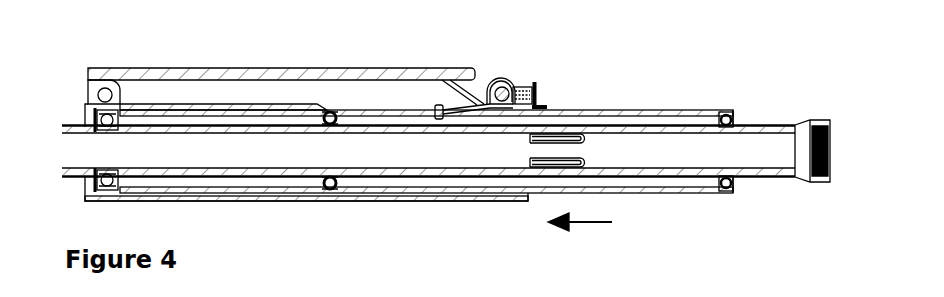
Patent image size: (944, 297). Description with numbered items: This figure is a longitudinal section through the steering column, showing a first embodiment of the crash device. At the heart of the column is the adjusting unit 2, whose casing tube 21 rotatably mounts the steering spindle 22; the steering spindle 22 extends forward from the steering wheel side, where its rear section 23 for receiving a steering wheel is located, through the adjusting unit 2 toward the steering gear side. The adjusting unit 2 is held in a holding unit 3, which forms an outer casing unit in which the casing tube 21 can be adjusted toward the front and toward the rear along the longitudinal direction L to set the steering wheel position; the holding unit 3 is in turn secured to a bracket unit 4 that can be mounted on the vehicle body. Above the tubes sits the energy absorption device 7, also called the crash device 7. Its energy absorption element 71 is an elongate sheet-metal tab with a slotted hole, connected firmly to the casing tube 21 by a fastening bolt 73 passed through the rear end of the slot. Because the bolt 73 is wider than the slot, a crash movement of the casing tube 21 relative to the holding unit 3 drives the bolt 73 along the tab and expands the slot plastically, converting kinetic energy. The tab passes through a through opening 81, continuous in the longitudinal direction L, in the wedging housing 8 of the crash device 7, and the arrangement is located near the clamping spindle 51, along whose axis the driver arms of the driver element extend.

The adjusting unit 2 is at (697, 91).
The casing tube 21 is at (650, 111).
The steering spindle 22 is at (760, 126).
The rear section of the steering spindle 23 is at (817, 119).
The holding unit 3 is at (207, 106).
The bracket unit 4 is at (345, 69).
The energy absorption device 7 is at (551, 88).
The energy absorption element 71 is at (472, 107).
The fastening bolt 73 is at (436, 105).
The clamping spindle 51 is at (492, 84).
The wedging housing 8 is at (528, 86).
The through opening 81 is at (514, 87).
The longitudinal direction L is at (593, 224).